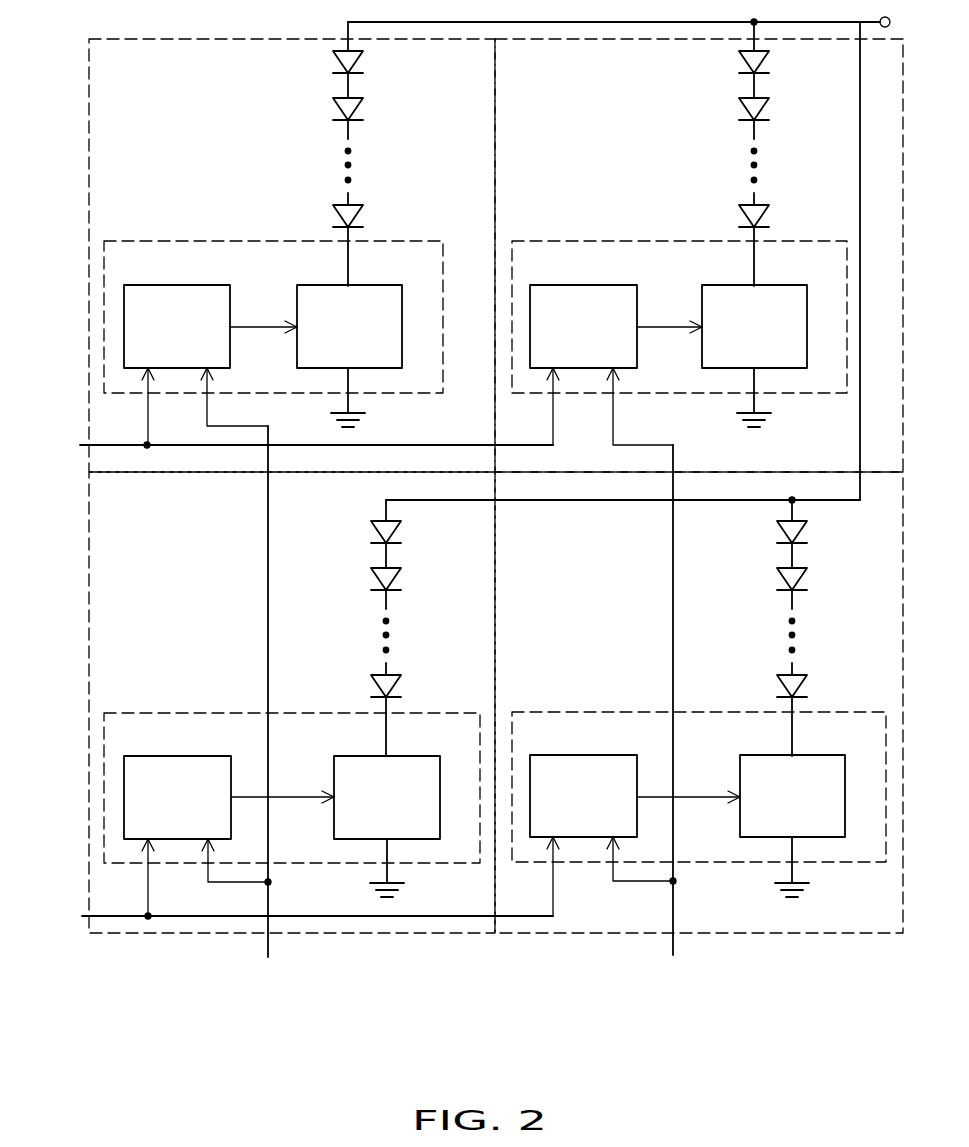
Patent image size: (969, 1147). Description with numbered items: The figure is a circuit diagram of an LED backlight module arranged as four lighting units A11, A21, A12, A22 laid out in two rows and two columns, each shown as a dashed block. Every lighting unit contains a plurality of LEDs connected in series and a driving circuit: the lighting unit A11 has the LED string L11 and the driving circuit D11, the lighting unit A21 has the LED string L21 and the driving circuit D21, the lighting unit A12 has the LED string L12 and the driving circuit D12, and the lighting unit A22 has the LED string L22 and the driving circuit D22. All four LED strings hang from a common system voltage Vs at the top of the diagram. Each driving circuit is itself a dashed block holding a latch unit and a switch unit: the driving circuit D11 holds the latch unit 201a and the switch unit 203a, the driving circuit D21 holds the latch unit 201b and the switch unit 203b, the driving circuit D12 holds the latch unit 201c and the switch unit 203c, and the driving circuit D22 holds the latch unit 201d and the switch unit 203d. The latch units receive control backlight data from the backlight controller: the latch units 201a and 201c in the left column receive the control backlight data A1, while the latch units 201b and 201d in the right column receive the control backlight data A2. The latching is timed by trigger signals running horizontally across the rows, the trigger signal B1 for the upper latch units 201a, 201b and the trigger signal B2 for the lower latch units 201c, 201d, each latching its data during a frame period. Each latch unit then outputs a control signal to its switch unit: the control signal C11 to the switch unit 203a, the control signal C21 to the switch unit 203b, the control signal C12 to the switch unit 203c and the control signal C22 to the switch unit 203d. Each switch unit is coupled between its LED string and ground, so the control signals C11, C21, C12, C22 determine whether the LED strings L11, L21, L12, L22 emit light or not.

The latch unit 201a is at (177, 285).
The latch unit 201b is at (582, 285).
The latch unit 201c is at (177, 756).
The latch unit 201d is at (582, 755).
The switch unit 203a is at (363, 285).
The switch unit 203b is at (770, 285).
The switch unit 203c is at (403, 756).
The switch unit 203d is at (808, 755).
The LED string L11 is at (362, 61).
The LED string L21 is at (768, 61).
The LED string L12 is at (400, 531).
The LED string L22 is at (806, 531).
The driving circuit D11 is at (193, 241).
The driving circuit D21 is at (598, 241).
The driving circuit D12 is at (147, 713).
The driving circuit D22 is at (553, 712).
The lighting unit A11 is at (292, 255).
The lighting unit A21 is at (699, 255).
The lighting unit A12 is at (292, 702).
The lighting unit A22 is at (699, 702).
The control signal C11 is at (263, 314).
The control signal C21 is at (669, 314).
The control signal C12 is at (282, 784).
The control signal C22 is at (688, 784).
The trigger signal B1 is at (304, 414).
The trigger signal B2 is at (305, 885).
The control backlight data A1 is at (240, 681).
The control backlight data A2 is at (647, 681).
The system voltage Vs is at (636, 256).